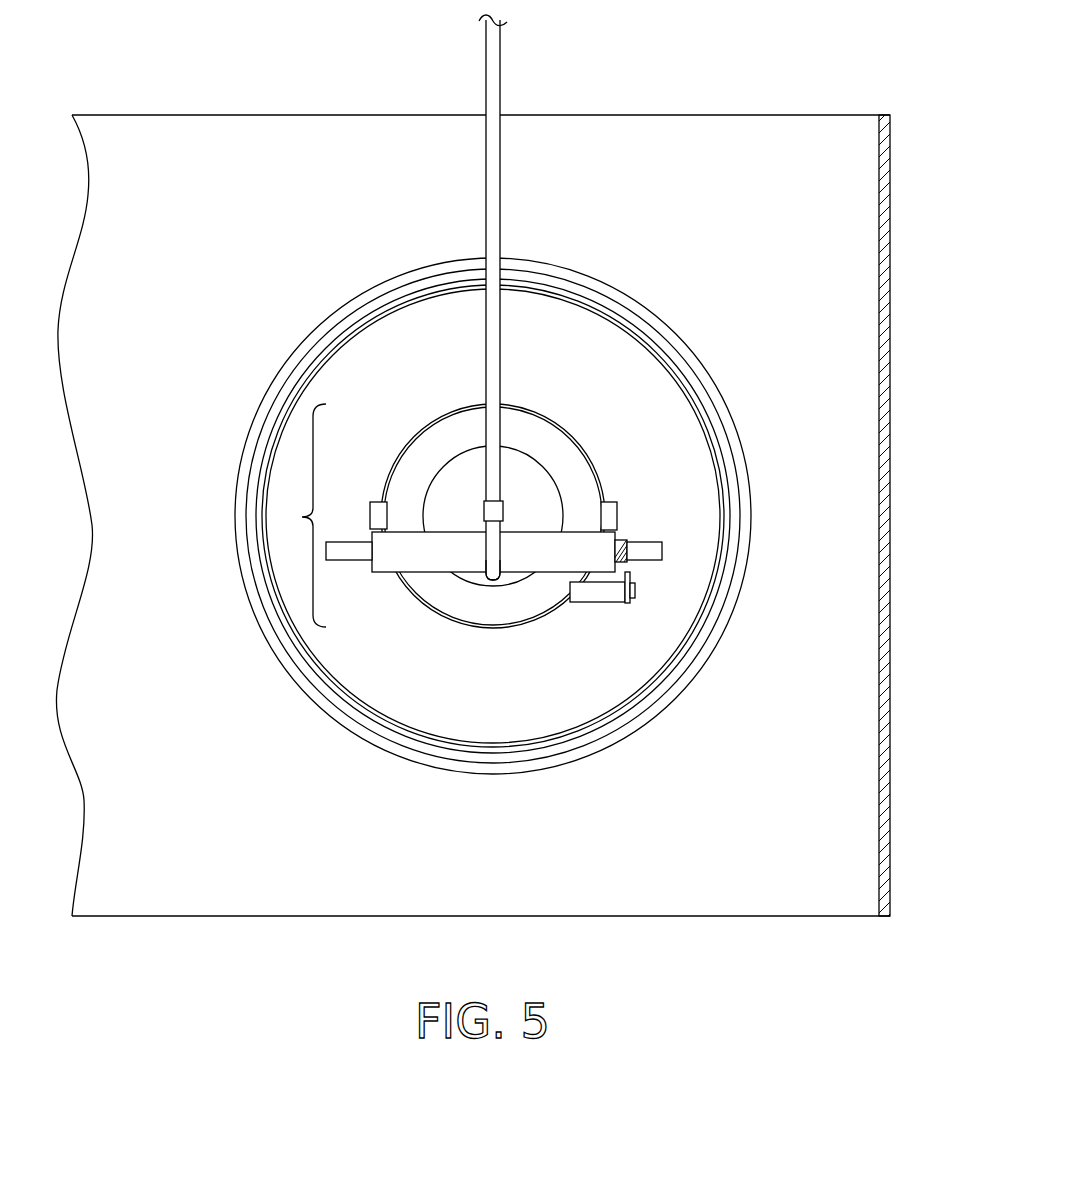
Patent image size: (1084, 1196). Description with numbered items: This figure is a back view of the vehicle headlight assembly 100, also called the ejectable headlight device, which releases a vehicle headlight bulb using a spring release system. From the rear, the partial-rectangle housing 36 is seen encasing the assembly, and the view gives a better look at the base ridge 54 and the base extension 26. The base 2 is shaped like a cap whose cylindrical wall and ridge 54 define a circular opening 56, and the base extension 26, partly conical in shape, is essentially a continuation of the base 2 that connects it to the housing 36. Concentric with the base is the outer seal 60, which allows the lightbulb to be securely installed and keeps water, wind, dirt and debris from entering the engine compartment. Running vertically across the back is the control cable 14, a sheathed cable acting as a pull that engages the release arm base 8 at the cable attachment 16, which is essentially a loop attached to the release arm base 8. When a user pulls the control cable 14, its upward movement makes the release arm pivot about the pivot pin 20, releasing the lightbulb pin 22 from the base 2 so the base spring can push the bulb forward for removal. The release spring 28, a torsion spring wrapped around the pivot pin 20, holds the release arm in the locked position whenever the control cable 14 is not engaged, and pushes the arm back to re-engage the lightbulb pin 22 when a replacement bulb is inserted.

The base 2 is at (302, 517).
The release arm base 8 is at (548, 560).
The control cable 14 is at (501, 71).
The cable attachment 16 is at (496, 585).
The pivot pin 20 is at (652, 548).
The lightbulb pin 22 is at (610, 513).
The base extension 26 is at (636, 380).
The release spring 28 is at (630, 573).
The housing 36 is at (768, 900).
The ridge 54 is at (548, 440).
The circular opening 56 is at (453, 483).
The outer seal 60 is at (697, 643).
The vehicle headlight assembly 100 is at (268, 987).